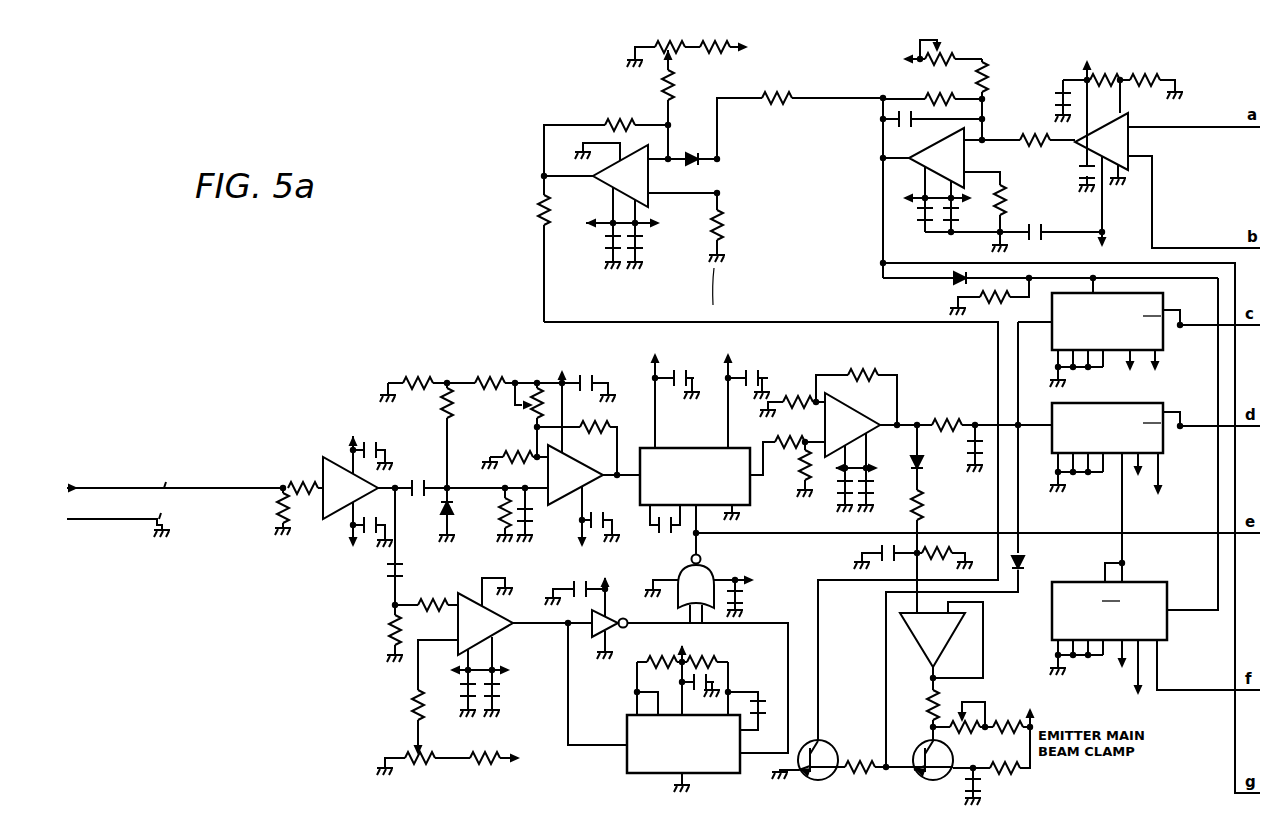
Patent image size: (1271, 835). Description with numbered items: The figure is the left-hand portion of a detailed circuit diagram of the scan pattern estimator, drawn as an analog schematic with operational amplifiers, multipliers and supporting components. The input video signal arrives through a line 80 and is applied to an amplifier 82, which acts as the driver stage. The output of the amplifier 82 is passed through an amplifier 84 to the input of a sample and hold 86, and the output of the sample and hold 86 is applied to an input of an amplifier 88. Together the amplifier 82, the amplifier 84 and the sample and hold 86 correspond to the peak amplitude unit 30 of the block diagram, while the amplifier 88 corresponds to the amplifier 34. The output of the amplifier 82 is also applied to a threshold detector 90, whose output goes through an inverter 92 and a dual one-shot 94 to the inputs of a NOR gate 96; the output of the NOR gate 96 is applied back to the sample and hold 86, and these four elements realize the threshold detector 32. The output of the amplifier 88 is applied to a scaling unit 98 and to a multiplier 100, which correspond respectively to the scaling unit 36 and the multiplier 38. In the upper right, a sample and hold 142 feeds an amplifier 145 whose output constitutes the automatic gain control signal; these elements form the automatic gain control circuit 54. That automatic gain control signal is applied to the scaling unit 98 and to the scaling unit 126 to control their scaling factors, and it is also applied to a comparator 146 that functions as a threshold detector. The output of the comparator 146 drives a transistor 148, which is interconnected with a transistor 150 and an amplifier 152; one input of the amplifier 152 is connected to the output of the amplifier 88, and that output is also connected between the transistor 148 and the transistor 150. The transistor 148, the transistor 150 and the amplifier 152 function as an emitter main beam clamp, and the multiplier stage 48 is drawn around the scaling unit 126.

The line 80 is at (175, 504).
The amplifier 82 is at (326, 478).
The amplifier 84 is at (552, 477).
The sample and hold 86 is at (712, 489).
The amplifier 88 is at (848, 425).
The threshold detector 90 is at (490, 622).
The inverter 92 is at (605, 633).
The dual one-shot 94 is at (700, 757).
The NOR gate 96 is at (706, 575).
The scaling unit 98 is at (1120, 334).
The multiplier 100 is at (1128, 432).
The scaling unit 126 is at (1102, 632).
The sample and hold 142 is at (1112, 150).
The amplifier 145 is at (952, 160).
The comparator 146 is at (635, 182).
The transistor 148 is at (836, 745).
The transistor 150 is at (957, 752).
The amplifier 152 is at (930, 640).
The peak amplitude unit 30 is at (510, 464).
The threshold detector 32 is at (472, 689).
The amplifier 34 is at (828, 424).
The scaling unit 36 is at (1071, 331).
The multiplier 38 is at (1155, 457).
The multiplier stage 48 is at (1155, 495).
The automatic gain control circuit 54 is at (1065, 159).